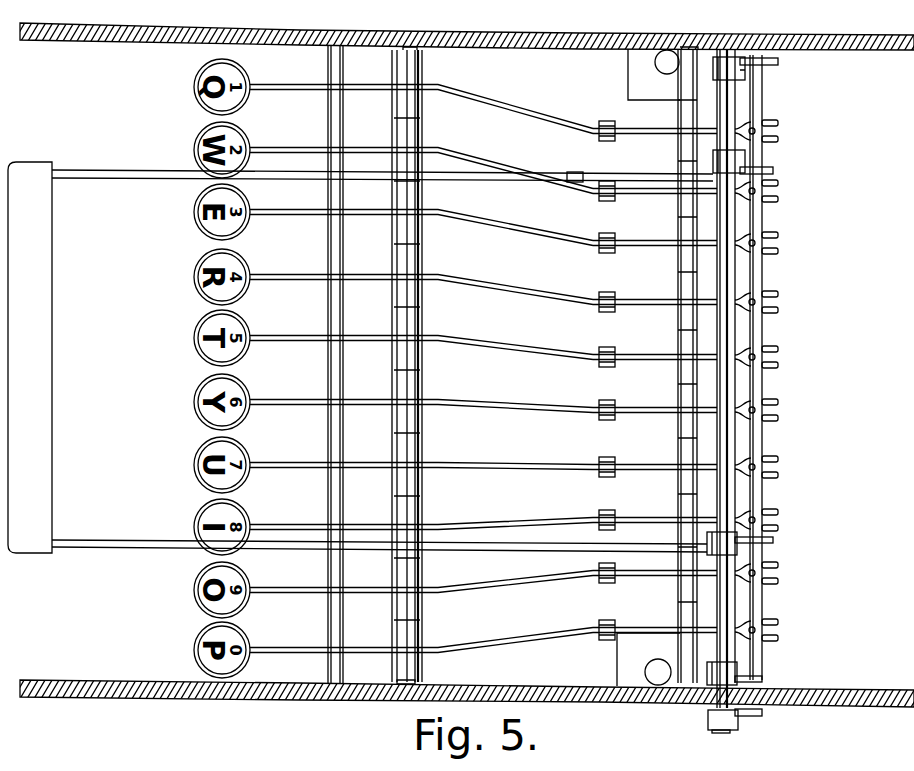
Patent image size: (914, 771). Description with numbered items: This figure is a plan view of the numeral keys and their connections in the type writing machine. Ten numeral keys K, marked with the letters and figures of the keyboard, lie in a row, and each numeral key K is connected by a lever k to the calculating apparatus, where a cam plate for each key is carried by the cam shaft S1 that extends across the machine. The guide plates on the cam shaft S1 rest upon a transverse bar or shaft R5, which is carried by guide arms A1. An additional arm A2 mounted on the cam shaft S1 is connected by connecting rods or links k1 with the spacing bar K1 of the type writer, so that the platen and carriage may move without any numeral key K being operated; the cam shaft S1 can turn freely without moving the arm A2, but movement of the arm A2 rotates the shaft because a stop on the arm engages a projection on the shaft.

The spacing bar K1 is at (30, 357).
The numeral key K is at (510, 112).
The lever k is at (655, 246).
The connecting rod or link k1 is at (533, 550).
The cam shaft S1 is at (730, 222).
The transverse bar or shaft R5 is at (762, 98).
The guide arm A1 is at (747, 714).
The additional arm A2 is at (762, 678).